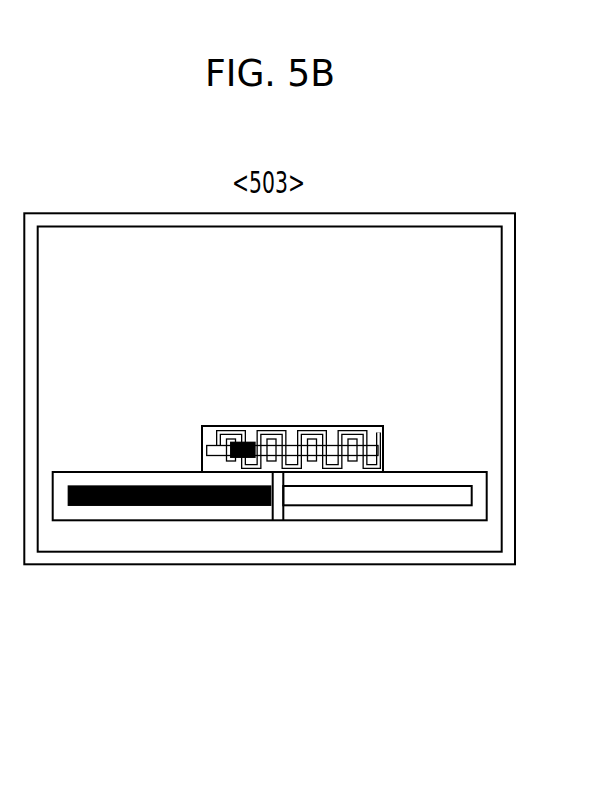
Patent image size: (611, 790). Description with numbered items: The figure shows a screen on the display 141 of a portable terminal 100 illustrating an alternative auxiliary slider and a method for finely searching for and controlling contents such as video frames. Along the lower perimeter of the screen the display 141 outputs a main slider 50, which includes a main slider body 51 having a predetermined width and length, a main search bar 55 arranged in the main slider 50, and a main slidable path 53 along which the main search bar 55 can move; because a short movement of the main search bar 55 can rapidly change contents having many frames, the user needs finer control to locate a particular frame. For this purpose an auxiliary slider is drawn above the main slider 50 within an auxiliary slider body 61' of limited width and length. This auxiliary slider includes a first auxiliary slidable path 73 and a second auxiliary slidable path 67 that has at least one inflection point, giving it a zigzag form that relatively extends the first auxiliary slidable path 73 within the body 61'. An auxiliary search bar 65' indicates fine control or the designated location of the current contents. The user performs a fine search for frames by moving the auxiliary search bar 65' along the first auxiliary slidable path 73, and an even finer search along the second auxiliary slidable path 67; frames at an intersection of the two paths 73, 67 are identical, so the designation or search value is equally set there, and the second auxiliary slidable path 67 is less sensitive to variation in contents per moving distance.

The portable terminal 100 is at (408, 209).
The display 141 is at (473, 303).
The main slider 50 is at (285, 650).
The main slider body 51 is at (143, 520).
The main slidable path 53 is at (208, 520).
The main search bar 55 is at (268, 520).
The auxiliary slider body 61' is at (299, 396).
The auxiliary search bar 65' is at (292, 393).
The second auxiliary slidable path 67 is at (234, 442).
The first auxiliary slidable path 73 is at (206, 450).